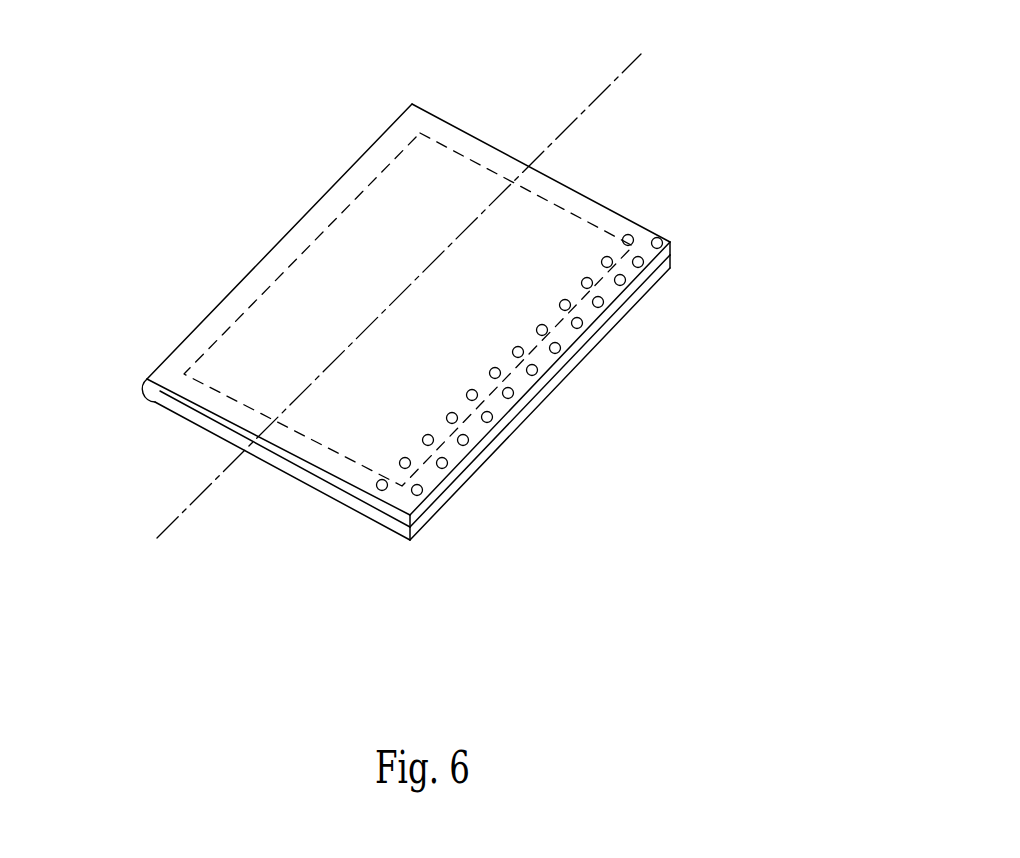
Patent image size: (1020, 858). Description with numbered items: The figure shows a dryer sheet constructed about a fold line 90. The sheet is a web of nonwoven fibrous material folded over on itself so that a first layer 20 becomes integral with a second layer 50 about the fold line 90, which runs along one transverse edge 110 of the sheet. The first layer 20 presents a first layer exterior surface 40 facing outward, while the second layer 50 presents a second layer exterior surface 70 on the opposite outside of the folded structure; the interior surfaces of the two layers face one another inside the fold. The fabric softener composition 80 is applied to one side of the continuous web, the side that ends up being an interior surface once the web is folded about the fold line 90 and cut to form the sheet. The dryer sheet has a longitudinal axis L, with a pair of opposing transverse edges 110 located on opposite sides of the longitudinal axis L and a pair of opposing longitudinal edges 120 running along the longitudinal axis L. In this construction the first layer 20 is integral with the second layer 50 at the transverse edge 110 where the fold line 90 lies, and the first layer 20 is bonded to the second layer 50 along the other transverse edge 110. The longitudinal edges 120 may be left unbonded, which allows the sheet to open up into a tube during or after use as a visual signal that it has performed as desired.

The first layer 20 is at (427, 518).
The first layer exterior surface 40 is at (382, 528).
The second layer 50 is at (455, 475).
The second layer exterior surface 70 is at (450, 403).
The fabric softener composition 80 is at (605, 197).
The fold line 90 is at (197, 340).
The transverse edges 110 is at (307, 213).
The longitudinal edges 120 is at (505, 155).
The longitudinal axis L is at (590, 103).